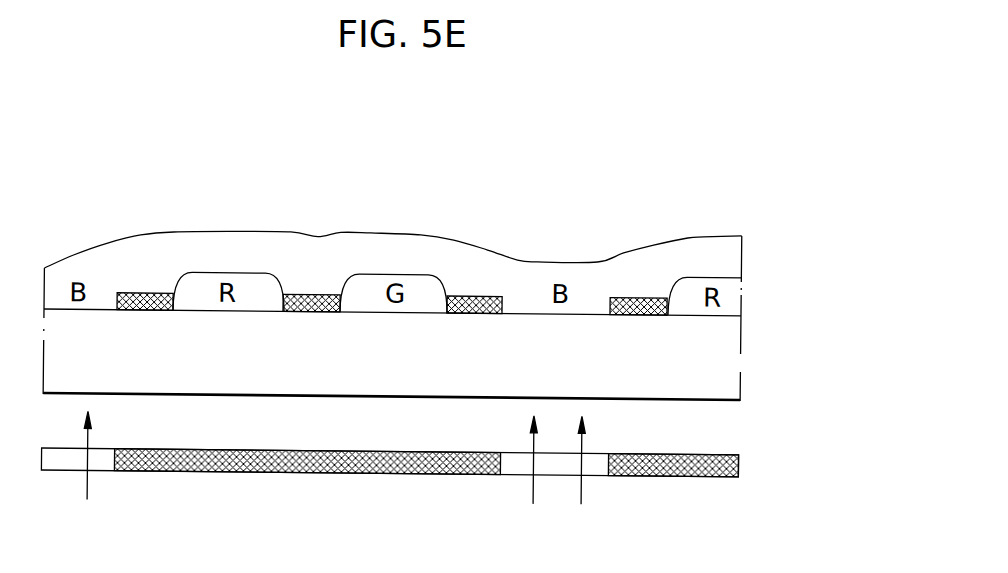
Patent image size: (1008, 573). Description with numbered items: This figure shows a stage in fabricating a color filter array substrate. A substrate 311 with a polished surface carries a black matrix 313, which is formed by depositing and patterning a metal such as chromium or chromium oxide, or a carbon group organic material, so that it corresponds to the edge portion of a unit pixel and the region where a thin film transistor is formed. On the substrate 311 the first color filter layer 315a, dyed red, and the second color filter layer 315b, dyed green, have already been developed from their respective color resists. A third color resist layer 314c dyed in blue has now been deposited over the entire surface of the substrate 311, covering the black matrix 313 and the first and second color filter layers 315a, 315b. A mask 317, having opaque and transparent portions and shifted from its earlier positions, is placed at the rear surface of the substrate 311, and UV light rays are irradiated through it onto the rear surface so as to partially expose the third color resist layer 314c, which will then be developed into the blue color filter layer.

The substrate 311 is at (730, 357).
The black matrix 313 is at (297, 297).
The third color resist layer 314c is at (730, 259).
The first color filter layer 315a is at (205, 283).
The second color filter layer 315b is at (373, 283).
The mask 317 is at (740, 463).